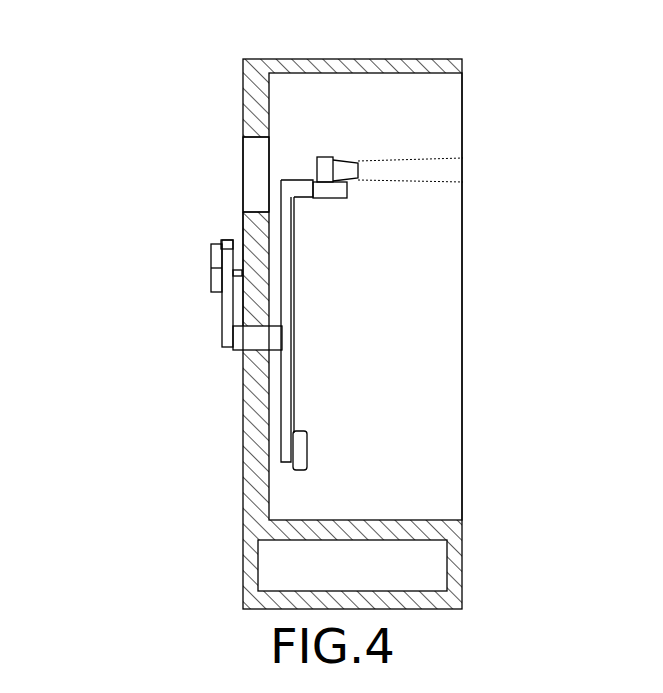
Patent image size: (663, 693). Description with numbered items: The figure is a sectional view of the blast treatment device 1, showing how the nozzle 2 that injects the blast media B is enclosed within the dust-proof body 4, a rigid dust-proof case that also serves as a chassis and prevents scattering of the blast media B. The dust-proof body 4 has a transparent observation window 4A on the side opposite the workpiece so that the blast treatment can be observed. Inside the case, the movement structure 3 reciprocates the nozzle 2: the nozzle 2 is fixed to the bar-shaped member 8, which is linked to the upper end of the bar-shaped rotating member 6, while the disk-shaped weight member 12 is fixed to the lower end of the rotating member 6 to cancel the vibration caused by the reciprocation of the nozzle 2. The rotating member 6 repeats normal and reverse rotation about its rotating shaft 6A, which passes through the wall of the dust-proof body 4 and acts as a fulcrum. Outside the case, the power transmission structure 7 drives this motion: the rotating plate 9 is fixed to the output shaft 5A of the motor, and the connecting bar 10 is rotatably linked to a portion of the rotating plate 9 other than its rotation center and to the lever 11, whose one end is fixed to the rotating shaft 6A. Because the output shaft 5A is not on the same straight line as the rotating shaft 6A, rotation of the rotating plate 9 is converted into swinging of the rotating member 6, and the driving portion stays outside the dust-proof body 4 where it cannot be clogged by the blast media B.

The blast treatment device 1 is at (128, 128).
The nozzle 2 is at (320, 157).
The movement structure 3 is at (298, 307).
The dust-proof body 4 is at (243, 101).
The transparent observation window 4A is at (243, 178).
The output shaft 5A is at (240, 236).
The rotating member 6 is at (295, 382).
The rotating shaft 6A is at (237, 352).
The power transmission structure 7 is at (172, 274).
The bar-shaped member 8 is at (330, 198).
The rotating plate 9 is at (222, 240).
The connecting bar 10 is at (183, 268).
The lever 11 is at (222, 322).
The weight member 12 is at (307, 450).
The blast media B is at (448, 158).